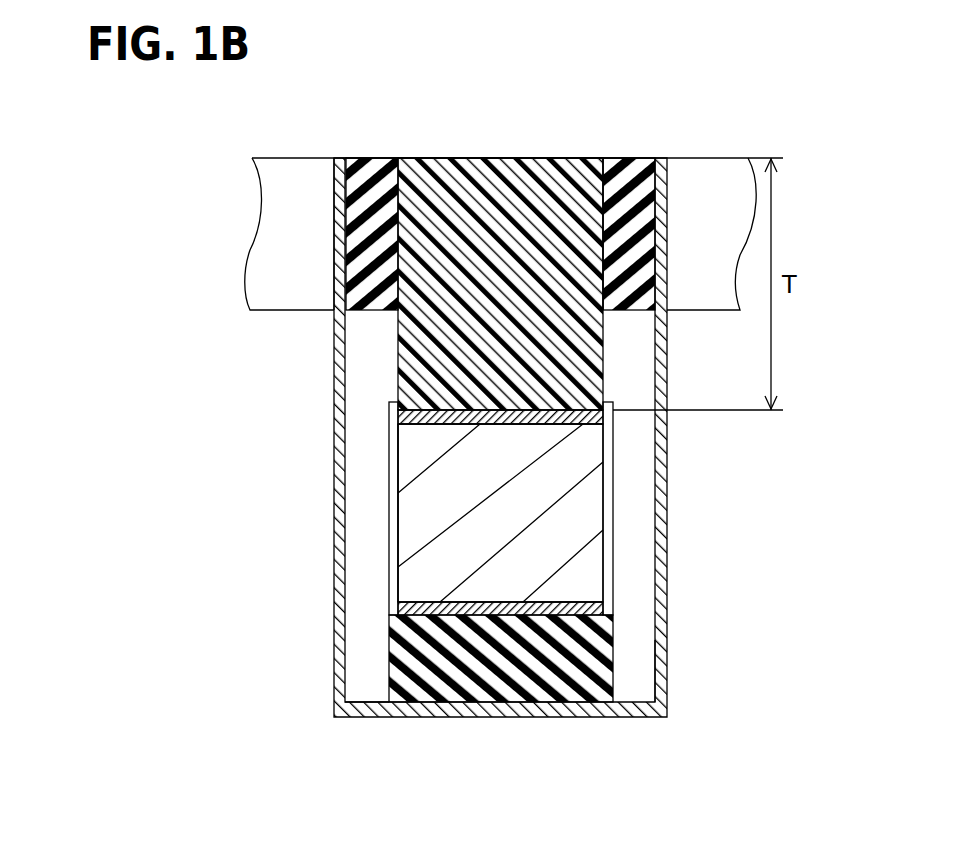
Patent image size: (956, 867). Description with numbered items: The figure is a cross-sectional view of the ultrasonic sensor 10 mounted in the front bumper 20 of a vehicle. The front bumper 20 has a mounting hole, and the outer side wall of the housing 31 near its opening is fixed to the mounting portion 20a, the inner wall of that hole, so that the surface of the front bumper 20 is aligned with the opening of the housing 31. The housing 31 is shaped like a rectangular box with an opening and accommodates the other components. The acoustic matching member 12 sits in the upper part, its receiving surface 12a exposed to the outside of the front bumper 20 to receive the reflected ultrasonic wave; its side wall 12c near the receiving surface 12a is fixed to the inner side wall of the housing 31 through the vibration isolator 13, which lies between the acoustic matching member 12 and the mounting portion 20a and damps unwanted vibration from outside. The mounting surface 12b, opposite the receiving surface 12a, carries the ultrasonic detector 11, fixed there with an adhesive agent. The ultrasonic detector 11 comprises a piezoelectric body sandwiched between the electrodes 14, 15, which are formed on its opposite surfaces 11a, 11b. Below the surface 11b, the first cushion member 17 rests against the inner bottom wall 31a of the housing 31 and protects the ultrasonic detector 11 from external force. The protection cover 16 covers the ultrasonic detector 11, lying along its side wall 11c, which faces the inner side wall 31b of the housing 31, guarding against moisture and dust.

The ultrasonic sensor 10 is at (713, 122).
The ultrasonic detector 11 is at (553, 538).
The surface of the piezoelectric body 11a is at (597, 428).
The surface of the ultrasonic detector 11b is at (473, 604).
The side wall of the ultrasonic detector 11c is at (397, 493).
The acoustic matching member 12 is at (603, 363).
The receiving surface 12a is at (513, 160).
The mounting surface 12b is at (397, 422).
The side wall of the acoustic matching member 12c is at (617, 190).
The vibration isolator 13 is at (377, 167).
The first electrode 14 is at (604, 411).
The second electrode 15 is at (604, 607).
The protection cover 16 is at (395, 538).
The first cushion member 17 is at (540, 675).
The front bumper 20 is at (312, 160).
The mounting portion 20a is at (348, 311).
The housing 31 is at (660, 508).
The inner bottom wall of the housing 31a is at (373, 700).
The inner side wall of the housing 31b is at (657, 662).